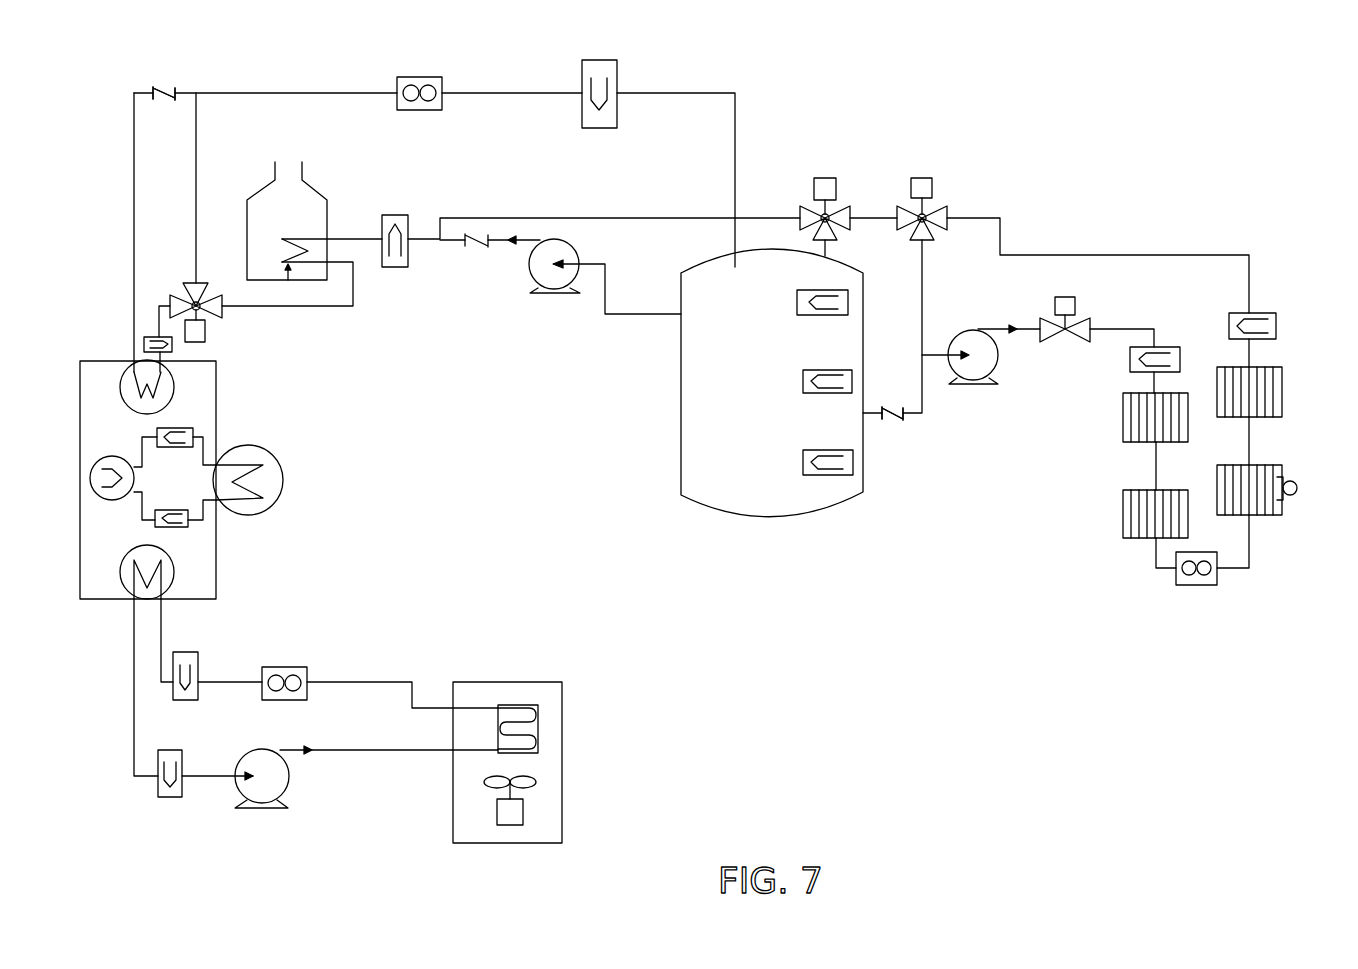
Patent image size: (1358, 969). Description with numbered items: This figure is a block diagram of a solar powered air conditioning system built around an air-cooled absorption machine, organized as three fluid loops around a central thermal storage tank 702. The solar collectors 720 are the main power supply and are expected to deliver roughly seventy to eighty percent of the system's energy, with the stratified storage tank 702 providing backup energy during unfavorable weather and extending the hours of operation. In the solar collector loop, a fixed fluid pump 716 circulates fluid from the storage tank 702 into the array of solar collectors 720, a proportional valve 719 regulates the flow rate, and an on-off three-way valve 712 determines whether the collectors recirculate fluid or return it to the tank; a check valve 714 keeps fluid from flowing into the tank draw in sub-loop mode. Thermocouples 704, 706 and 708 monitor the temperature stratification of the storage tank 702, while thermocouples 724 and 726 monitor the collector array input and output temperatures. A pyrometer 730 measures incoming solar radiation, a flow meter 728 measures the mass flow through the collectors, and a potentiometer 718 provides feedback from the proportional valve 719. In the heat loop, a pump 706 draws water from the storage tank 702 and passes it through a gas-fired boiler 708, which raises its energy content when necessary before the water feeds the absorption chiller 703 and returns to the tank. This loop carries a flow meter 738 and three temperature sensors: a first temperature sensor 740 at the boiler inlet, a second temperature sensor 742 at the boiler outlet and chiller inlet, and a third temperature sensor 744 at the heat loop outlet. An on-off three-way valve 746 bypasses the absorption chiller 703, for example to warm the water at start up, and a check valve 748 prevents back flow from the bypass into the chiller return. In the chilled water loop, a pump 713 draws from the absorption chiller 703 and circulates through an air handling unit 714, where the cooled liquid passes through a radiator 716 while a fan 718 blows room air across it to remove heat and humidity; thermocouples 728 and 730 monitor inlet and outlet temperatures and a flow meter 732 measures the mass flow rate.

The thermal storage tank 702 is at (778, 517).
The absorption chiller 703 is at (216, 418).
The thermocouple 704 is at (848, 303).
The pump 706 is at (547, 293).
The boiler 708 is at (313, 190).
The on-off three-way valve 712 is at (947, 200).
The pump 713 is at (273, 810).
The air handling unit 714 is at (563, 807).
The fixed fluid pump 716 is at (540, 723).
The potentiometer 718 is at (513, 825).
The proportional valve 719 is at (1088, 320).
The solar collectors 720 is at (1283, 385).
The thermocouple 724 is at (1130, 365).
The thermocouple 726 is at (1258, 313).
The flow meter 728 is at (170, 797).
The pyrometer 730 is at (197, 663).
The flow meter 732 is at (292, 663).
The flow meter 738 is at (433, 75).
The first temperature sensor 740 is at (398, 268).
The second temperature sensor 742 is at (141, 335).
The third temperature sensor 744 is at (618, 60).
The on-off three-way valve 746 is at (222, 320).
The check valve 748 is at (162, 85).